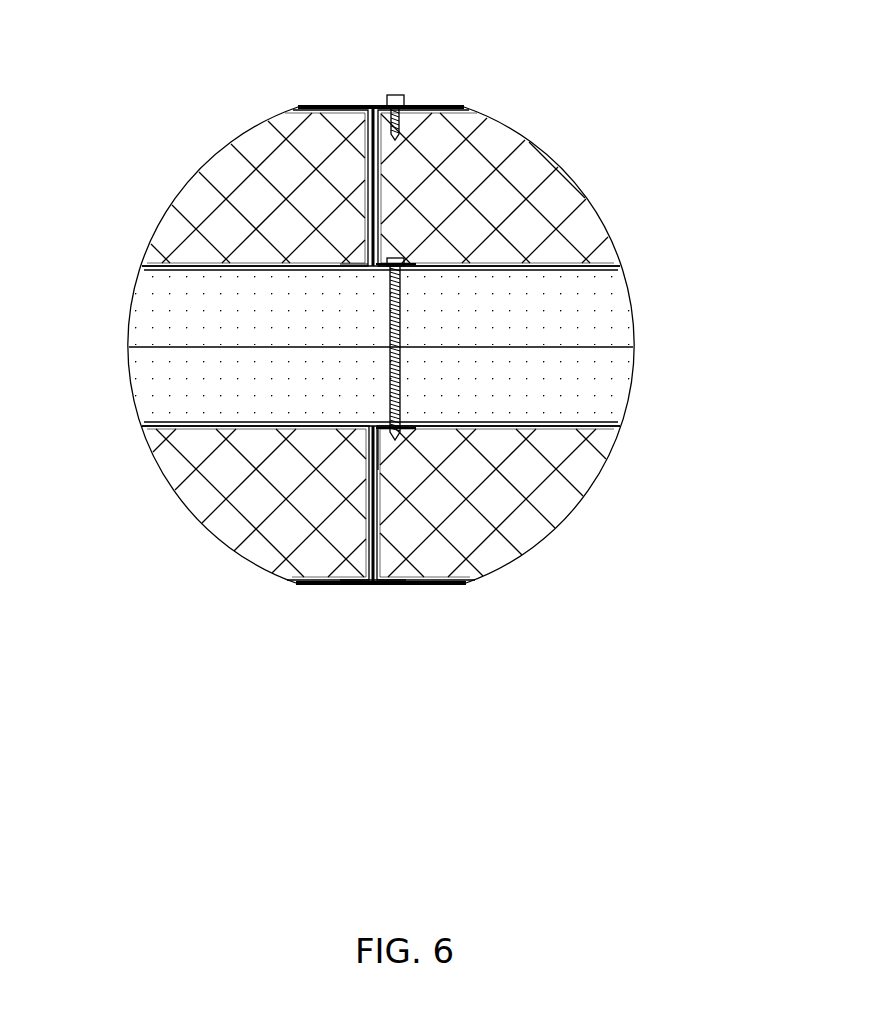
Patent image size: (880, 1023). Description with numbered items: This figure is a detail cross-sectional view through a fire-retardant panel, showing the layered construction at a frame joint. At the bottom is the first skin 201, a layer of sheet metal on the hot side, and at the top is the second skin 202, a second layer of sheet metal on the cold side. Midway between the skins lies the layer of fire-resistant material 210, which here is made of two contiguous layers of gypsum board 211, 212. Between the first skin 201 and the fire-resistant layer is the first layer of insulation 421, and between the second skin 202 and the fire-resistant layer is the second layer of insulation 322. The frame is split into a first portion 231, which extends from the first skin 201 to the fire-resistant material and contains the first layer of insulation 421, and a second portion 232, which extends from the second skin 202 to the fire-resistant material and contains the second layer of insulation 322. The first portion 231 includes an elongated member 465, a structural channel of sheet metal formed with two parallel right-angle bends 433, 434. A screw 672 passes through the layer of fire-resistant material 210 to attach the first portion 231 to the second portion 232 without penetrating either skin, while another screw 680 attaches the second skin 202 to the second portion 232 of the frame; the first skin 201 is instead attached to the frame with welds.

The first skin 201 is at (410, 583).
The second skin 202 is at (420, 106).
The layer of fire-resistant material 210 is at (447, 339).
The first layer of gypsum board 211 is at (607, 392).
The second layer of gypsum board 212 is at (613, 305).
The first portion of the frame 231 is at (370, 503).
The second portion of the frame 232 is at (368, 138).
The second layer of insulation 322 is at (232, 207).
The first layer of insulation 421 is at (180, 480).
The right-angle bend 433 is at (373, 424).
The right-angle bend 434 is at (373, 583).
The elongated member 465 is at (375, 517).
The screw 672 is at (390, 323).
The screw 680 is at (393, 95).